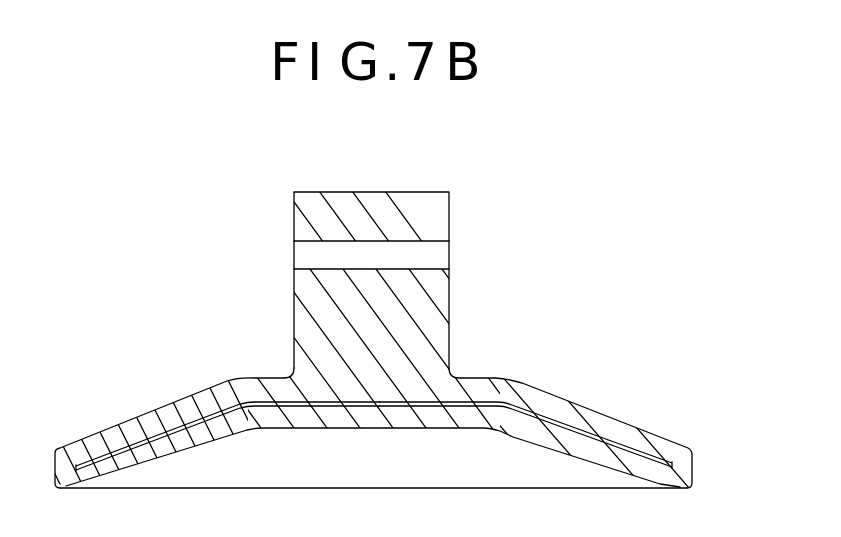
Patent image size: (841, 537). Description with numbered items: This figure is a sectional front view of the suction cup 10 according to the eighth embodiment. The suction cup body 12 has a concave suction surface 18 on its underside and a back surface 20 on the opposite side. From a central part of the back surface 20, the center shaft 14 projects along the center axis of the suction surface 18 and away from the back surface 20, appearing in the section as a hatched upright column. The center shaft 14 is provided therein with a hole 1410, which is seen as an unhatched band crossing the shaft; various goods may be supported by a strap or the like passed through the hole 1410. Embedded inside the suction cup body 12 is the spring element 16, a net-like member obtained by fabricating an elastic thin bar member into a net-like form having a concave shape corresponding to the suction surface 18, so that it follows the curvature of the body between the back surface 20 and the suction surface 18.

The suction cup 10 is at (572, 192).
The suction cup body 12 is at (642, 428).
The center shaft 14 is at (450, 206).
The hole 1410 is at (305, 258).
The spring element 16 is at (530, 407).
The suction surface 18 is at (192, 452).
The back surface 20 is at (152, 410).